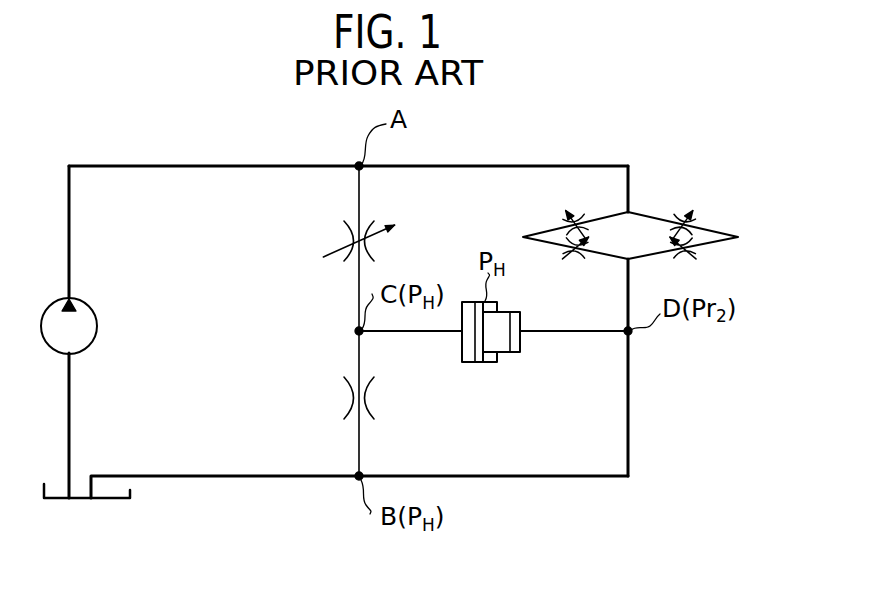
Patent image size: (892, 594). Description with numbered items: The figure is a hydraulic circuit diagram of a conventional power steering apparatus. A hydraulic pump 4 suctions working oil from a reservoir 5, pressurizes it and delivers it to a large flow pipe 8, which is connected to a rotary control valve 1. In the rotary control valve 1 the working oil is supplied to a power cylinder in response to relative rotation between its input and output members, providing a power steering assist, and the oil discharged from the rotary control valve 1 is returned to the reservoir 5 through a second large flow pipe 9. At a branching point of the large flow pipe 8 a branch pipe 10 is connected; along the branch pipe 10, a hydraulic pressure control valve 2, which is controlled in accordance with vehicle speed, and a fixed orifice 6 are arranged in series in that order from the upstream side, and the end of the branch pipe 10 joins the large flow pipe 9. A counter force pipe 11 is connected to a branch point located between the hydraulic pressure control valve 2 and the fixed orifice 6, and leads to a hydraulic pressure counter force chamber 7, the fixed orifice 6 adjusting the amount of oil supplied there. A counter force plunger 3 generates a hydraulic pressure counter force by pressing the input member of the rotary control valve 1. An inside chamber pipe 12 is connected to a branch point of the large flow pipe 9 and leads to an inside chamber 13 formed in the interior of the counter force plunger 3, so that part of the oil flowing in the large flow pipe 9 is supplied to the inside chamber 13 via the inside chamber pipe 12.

The rotary control valve 1 is at (665, 208).
The hydraulic pressure control valve 2 is at (376, 243).
The counter force plunger 3 is at (521, 376).
The hydraulic pump 4 is at (97, 327).
The reservoir 5 is at (131, 492).
The fixed orifice 6 is at (368, 398).
The hydraulic pressure counter force chamber 7 is at (468, 364).
The large flow pipe 8 is at (253, 165).
The large flow pipe 9 is at (553, 479).
The branch pipe 10 is at (360, 200).
The counter force pipe 11 is at (422, 334).
The inside chamber pipe 12 is at (592, 334).
The inside chamber 13 is at (517, 344).